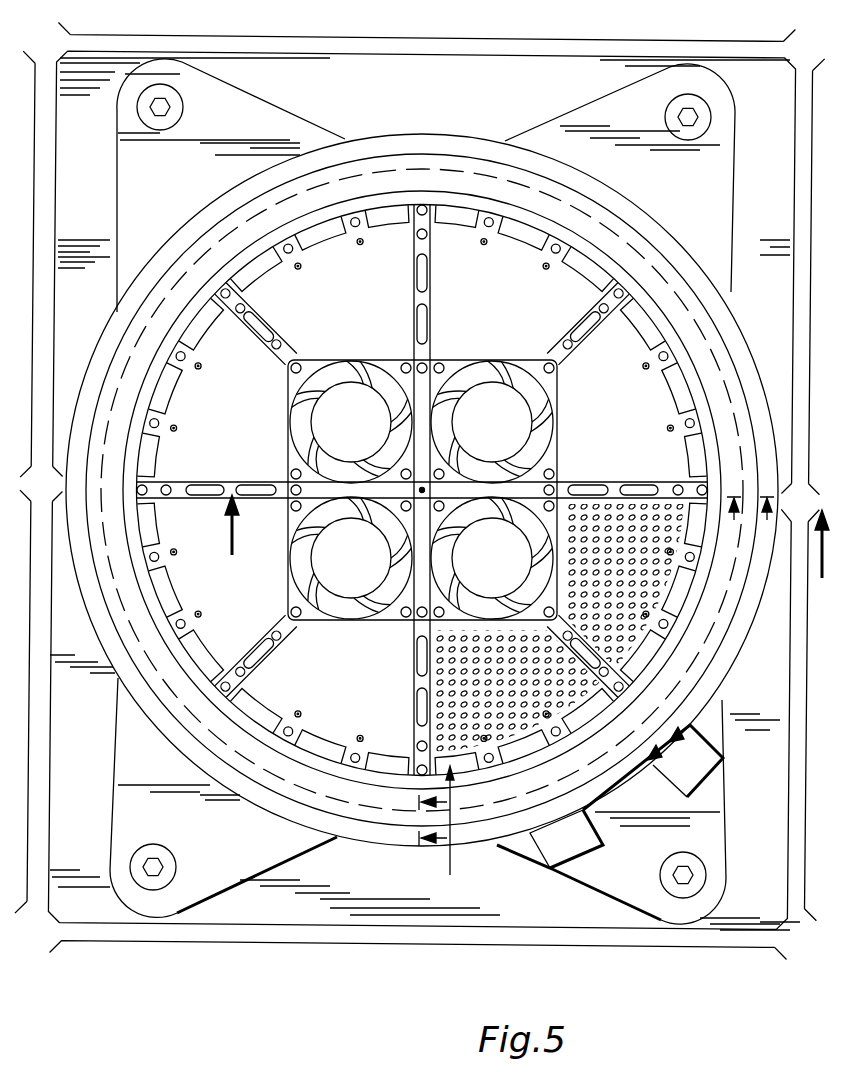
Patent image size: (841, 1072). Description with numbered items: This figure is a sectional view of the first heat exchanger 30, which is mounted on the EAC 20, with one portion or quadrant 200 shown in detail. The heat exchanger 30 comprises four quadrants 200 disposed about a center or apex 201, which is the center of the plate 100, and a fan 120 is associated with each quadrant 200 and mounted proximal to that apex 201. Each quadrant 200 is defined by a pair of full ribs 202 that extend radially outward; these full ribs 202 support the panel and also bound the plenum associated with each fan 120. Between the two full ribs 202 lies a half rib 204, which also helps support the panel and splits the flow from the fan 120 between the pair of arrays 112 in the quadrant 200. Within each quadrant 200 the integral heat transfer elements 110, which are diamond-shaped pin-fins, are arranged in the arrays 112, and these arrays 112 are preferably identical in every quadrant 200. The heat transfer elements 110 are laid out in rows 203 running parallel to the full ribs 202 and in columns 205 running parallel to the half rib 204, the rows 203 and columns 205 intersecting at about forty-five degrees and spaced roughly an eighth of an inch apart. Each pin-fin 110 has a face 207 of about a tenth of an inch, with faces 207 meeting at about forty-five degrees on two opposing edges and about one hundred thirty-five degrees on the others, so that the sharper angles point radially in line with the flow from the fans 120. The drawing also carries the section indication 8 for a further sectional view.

The section line 8- 8 is at (527, 670).
The EAC 20 is at (370, 126).
The first heat exchanger 30 is at (422, 465).
The plate 100 is at (422, 490).
The integral heat transfer elements 110 is at (480, 691).
The arrays 112 is at (305, 157).
The fan 120 is at (421, 488).
The quadrant 200 is at (268, 172).
The apex 201 is at (381, 460).
The full ribs 202 is at (422, 490).
The rows 203 is at (430, 822).
The half rib 204 is at (617, 690).
The columns 205 is at (645, 790).
The face 207 is at (598, 642).